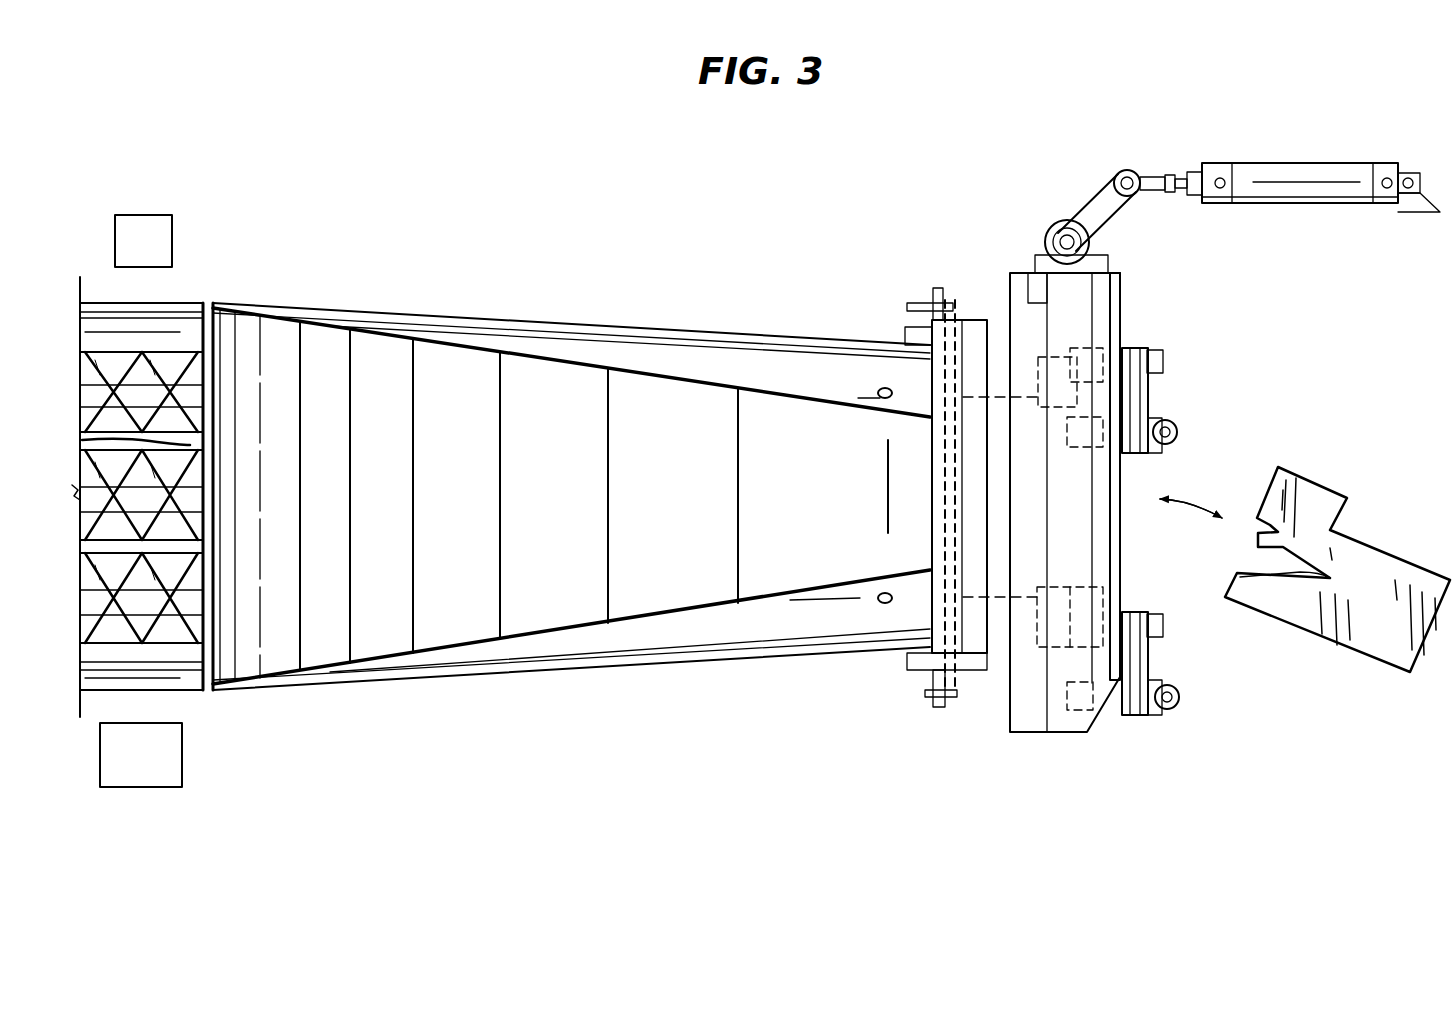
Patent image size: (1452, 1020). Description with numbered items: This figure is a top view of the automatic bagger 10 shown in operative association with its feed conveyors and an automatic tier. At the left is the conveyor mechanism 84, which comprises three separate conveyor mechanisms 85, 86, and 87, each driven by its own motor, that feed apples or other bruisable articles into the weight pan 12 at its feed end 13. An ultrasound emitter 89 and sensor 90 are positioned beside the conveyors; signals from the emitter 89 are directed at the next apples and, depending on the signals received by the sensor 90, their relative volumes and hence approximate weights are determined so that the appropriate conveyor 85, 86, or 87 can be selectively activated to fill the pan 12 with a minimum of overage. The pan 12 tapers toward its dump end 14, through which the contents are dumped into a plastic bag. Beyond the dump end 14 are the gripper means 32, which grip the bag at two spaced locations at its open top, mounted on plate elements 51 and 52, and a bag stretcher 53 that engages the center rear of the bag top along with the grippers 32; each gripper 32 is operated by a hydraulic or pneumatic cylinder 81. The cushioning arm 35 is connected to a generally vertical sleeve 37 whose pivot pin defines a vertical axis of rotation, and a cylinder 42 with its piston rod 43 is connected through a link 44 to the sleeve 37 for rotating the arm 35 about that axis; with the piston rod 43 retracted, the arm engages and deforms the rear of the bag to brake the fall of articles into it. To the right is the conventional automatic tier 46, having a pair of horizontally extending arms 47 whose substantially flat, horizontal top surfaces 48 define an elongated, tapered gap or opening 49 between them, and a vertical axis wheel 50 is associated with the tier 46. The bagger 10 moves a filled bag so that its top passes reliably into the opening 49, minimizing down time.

The automatic bagger 10 is at (577, 172).
The pan 12 is at (625, 322).
The feed end 13 is at (122, 459).
The dump end 14 is at (975, 640).
The gripper means 32 is at (1027, 337).
The arm 35 is at (1105, 327).
The sleeve 37 is at (1048, 228).
The cylinder 42 is at (1282, 200).
The piston rod 43 is at (1178, 178).
The link 44 is at (1093, 208).
The automatic tier 46 is at (1302, 633).
The arms 47 is at (1283, 490).
The top surfaces 48 is at (1382, 580).
The gap or opening 49 is at (1232, 542).
The vertical axis wheel 50 is at (1290, 567).
The mounting element 51 is at (1045, 410).
The mounting element 52 is at (1038, 595).
The bag stretcher 53 is at (1082, 455).
The cylinder 81 is at (1180, 412).
The conveyor mechanism 84 is at (192, 280).
The conveyor mechanism 85 is at (222, 362).
The conveyor mechanism 86 is at (222, 512).
The conveyor mechanism 87 is at (222, 572).
The ultrasound emitter 89 is at (137, 790).
The sensor 90 is at (142, 225).